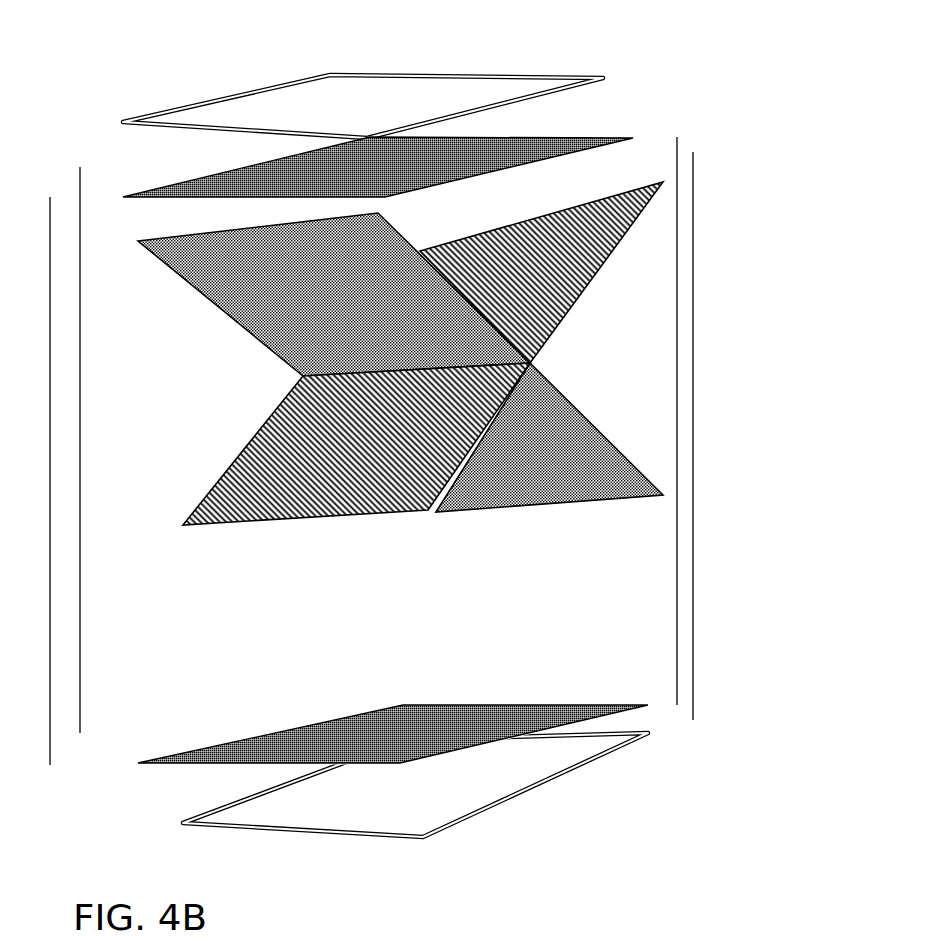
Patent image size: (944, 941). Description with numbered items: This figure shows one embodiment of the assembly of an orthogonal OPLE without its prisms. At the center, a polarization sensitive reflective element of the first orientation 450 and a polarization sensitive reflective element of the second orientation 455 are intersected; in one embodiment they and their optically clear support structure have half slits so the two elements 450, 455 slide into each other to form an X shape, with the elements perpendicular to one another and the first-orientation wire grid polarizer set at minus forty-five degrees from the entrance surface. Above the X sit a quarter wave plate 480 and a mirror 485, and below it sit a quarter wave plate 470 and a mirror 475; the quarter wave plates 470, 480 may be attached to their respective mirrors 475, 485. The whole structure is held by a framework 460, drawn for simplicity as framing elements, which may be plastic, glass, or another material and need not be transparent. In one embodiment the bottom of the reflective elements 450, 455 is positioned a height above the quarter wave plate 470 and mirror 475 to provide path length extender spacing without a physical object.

The polarization sensitive reflective element of the first orientation 450 is at (380, 362).
The polarization sensitive reflective element of the second orientation 455 is at (528, 353).
The framework 460 is at (355, 440).
The quarter wave plate 470 is at (362, 778).
The mirror 475 is at (418, 785).
The quarter wave plate 480 is at (455, 152).
The mirror 485 is at (399, 89).